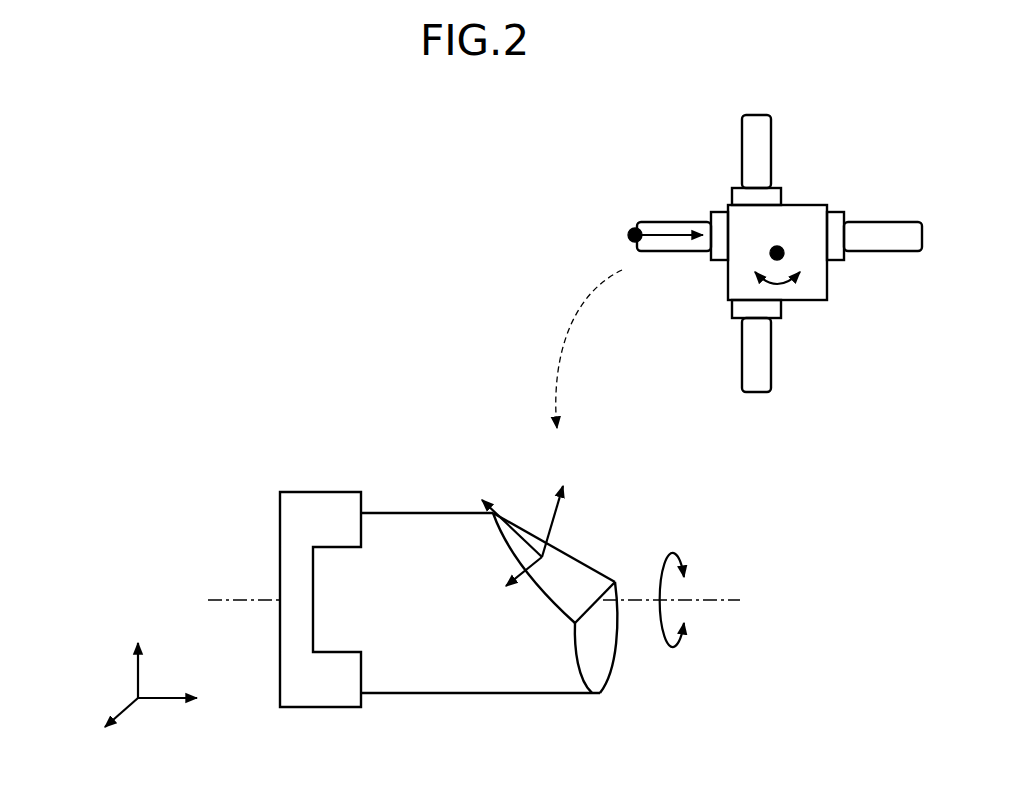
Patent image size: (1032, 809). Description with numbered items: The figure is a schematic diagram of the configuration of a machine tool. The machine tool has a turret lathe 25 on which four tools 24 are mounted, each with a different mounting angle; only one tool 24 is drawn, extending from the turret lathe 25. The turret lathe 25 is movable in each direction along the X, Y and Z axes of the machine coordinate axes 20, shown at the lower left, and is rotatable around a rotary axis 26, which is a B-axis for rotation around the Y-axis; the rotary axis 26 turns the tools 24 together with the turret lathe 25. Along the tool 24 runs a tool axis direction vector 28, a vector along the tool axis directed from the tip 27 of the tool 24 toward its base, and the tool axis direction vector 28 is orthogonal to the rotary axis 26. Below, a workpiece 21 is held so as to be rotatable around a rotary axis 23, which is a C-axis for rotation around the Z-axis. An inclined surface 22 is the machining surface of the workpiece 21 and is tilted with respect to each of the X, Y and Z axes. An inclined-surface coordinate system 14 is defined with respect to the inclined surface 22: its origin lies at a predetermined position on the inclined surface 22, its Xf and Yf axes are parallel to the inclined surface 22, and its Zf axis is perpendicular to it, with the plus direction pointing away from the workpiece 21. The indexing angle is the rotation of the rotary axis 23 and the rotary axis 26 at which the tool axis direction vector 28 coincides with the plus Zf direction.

The inclined-surface coordinate system 14 is at (526, 459).
The machine coordinate axes 20 is at (113, 667).
The workpiece 21 is at (394, 530).
The inclined surface 22 is at (578, 573).
The rotary axis 23 is at (715, 600).
The tool 24 is at (670, 252).
The turret lathe 25 is at (810, 203).
The rotary axis 26 is at (785, 252).
The tip 27 is at (628, 235).
The tool axis direction vector 28 is at (670, 223).